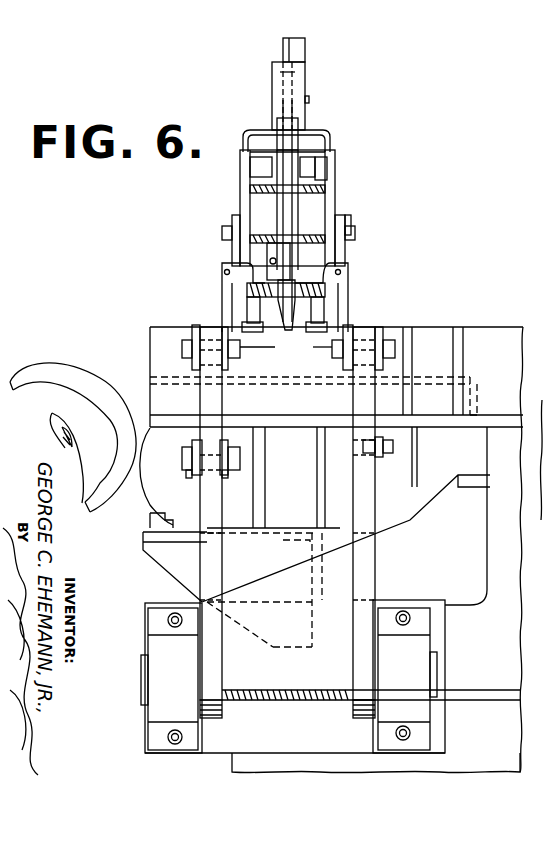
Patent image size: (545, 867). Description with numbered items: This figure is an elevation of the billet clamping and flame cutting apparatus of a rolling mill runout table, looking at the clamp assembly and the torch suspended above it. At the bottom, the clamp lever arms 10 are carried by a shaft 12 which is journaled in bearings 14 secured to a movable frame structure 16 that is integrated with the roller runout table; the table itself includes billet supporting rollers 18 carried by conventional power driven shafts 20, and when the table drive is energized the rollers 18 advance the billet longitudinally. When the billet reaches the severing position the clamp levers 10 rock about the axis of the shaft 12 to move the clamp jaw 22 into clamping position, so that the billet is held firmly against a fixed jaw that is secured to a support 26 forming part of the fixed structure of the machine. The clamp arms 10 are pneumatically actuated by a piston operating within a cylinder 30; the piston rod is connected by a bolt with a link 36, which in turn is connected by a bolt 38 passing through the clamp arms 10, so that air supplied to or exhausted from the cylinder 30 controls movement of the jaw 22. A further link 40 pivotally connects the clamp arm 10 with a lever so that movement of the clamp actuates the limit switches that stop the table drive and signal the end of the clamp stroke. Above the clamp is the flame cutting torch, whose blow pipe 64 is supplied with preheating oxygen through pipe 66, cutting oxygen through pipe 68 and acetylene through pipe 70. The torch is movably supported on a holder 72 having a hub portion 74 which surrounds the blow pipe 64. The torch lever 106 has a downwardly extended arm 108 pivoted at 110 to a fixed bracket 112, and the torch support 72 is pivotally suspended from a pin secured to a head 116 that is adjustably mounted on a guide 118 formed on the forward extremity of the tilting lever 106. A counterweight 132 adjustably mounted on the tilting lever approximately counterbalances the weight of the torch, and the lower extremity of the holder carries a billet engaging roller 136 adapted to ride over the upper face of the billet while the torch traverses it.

The clamp lever arms 10 is at (207, 573).
The shaft 12 is at (290, 690).
The bearings 14 is at (165, 656).
The movable frame structure 16 is at (500, 725).
The billet supporting rollers 18 is at (58, 372).
The power driven shafts 20 is at (76, 430).
The clamp jaw 22 is at (182, 350).
The support 26 is at (432, 425).
The cylinder 30 is at (155, 483).
The link 36 is at (227, 478).
The bolt 38 is at (240, 457).
The link 40 is at (383, 457).
The blow pipe 64 is at (277, 208).
The pipe 66 is at (286, 100).
The pipe 68 is at (277, 118).
The pipe 70 is at (306, 152).
The holder 72 is at (300, 212).
The hub portion 74 is at (348, 258).
The torch lever 106 is at (283, 52).
The downwardly extended arm 108 is at (336, 173).
The pivot 110 is at (352, 236).
The fixed bracket 112 is at (222, 233).
The head 116 is at (333, 148).
The guide 118 is at (333, 163).
The counterweight 132 is at (298, 84).
The billet engaging roller 136 is at (255, 334).